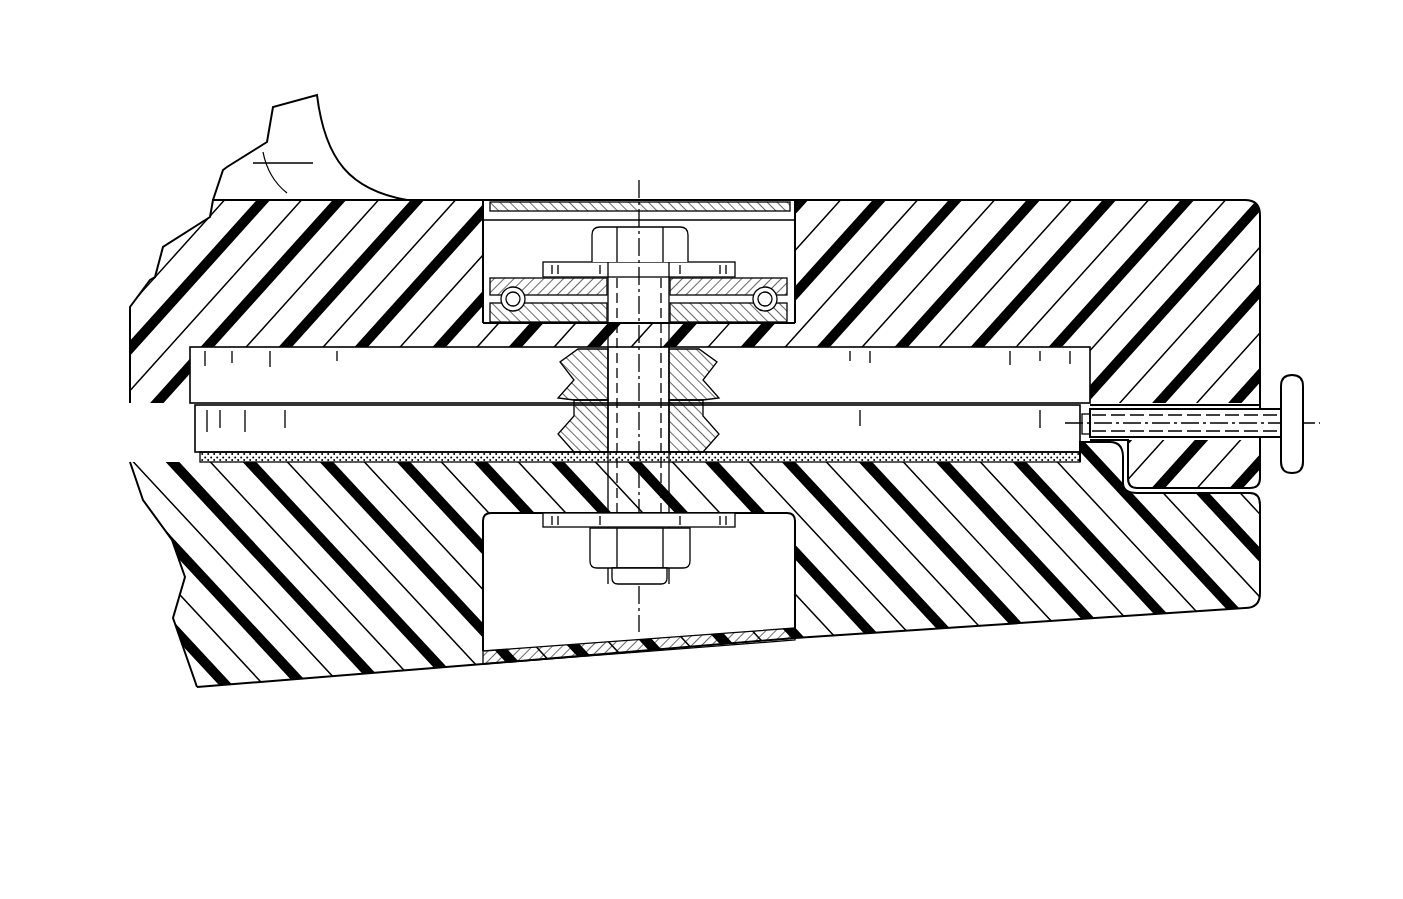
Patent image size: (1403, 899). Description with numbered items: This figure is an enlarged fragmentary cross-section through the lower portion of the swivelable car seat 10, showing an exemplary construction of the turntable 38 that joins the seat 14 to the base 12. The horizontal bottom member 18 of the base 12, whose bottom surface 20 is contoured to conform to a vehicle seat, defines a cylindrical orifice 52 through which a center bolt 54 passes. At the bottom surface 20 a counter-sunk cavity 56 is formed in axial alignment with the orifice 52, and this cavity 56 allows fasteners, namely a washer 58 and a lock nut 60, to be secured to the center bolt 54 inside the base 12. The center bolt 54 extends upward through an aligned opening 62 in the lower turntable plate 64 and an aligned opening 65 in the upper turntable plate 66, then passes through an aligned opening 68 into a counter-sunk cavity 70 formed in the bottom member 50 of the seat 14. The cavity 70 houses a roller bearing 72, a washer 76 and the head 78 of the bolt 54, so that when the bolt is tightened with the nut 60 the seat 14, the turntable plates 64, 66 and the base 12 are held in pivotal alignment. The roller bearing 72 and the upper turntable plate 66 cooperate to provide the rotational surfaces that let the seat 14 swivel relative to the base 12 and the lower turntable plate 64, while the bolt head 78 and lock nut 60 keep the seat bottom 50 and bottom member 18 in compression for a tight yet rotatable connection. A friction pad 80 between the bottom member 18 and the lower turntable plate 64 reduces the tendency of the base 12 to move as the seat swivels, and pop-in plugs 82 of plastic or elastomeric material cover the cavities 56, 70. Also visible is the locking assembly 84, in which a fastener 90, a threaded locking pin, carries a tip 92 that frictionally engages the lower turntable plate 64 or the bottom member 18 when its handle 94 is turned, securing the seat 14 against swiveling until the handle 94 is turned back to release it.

The swivelable car seat 10 is at (701, 435).
The base 12 is at (1134, 620).
The seat 14 is at (701, 428).
The horizontal bottom member 18 is at (701, 606).
The bottom surface 20 is at (334, 680).
The turntable 38 is at (180, 424).
The bottom member of seat 50 is at (906, 232).
The cylindrical orifice 52 is at (612, 486).
The center bolt 54 is at (648, 295).
The counter-sunk cavity 56 is at (485, 550).
The washer 58 is at (700, 523).
The lock nut 60 is at (607, 553).
The opening 62 is at (718, 420).
The lower turntable plate 64 is at (347, 441).
The opening 65 is at (612, 355).
The upper turntable plate 66 is at (412, 388).
The opening 68 is at (660, 338).
The counter-sunk cavity 70 is at (760, 282).
The roller bearing 72 is at (738, 298).
The washer 76 is at (700, 262).
The bolt head 78 is at (630, 244).
The friction pad 80 is at (212, 460).
The pop-in plugs 82 is at (564, 205).
The locking assembly 84 is at (1306, 482).
The fastener 90 is at (1197, 418).
The tip 92 is at (1079, 430).
The handle 94 is at (1295, 400).